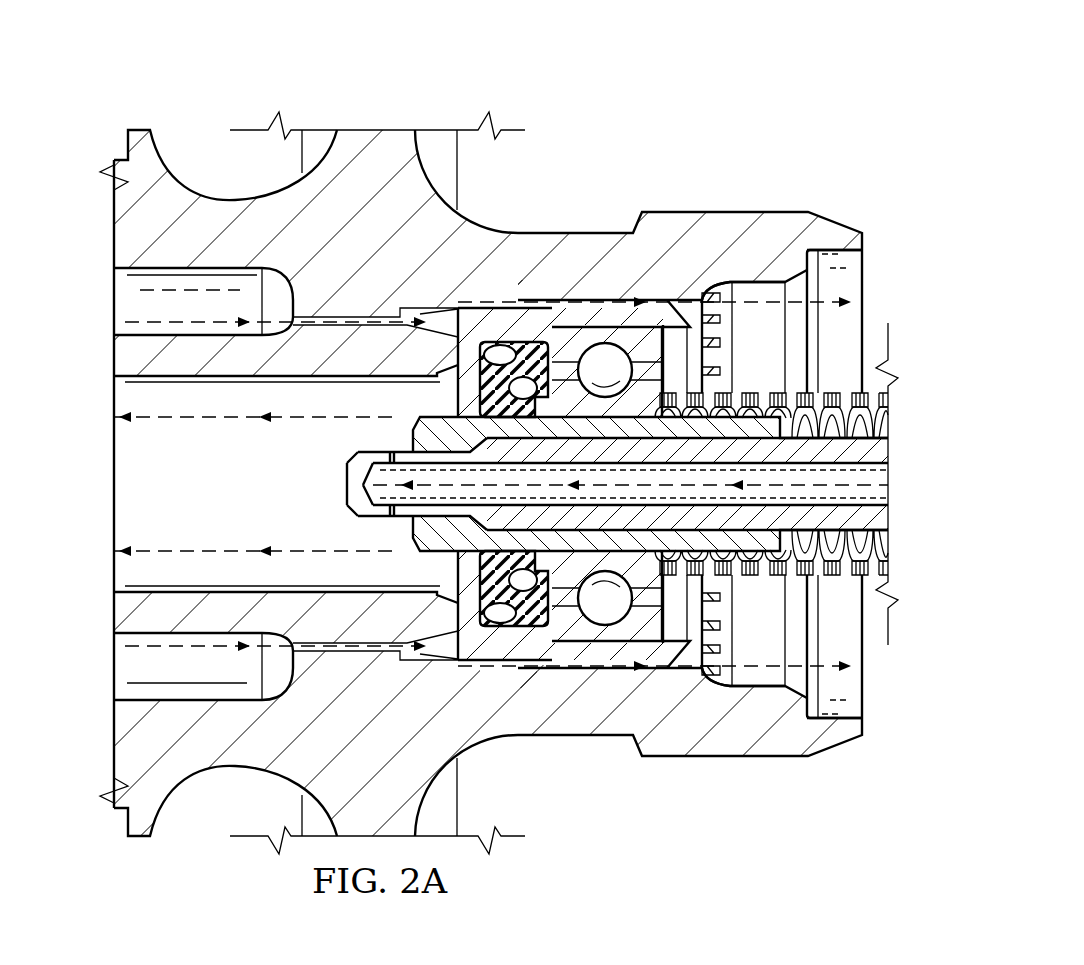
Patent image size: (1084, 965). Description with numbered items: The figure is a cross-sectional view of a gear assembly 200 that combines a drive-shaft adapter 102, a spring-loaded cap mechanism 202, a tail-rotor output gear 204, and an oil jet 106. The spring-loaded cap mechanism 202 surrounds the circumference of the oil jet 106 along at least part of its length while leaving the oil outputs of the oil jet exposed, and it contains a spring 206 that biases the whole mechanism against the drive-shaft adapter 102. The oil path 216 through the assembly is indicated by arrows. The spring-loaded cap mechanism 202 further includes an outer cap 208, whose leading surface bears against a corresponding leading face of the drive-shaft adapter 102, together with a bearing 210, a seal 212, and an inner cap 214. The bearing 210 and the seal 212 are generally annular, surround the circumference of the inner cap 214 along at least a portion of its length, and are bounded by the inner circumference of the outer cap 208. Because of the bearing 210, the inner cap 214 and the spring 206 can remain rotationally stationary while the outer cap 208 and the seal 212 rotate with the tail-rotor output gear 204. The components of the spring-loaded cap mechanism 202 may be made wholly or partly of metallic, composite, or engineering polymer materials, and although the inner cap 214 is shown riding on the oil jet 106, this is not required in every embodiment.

The gear assembly 200 is at (668, 68).
The drive-shaft adapter 102 is at (123, 350).
The tail-rotor output gear 204 is at (731, 217).
The bearing 210 is at (580, 337).
The seal 212 is at (490, 375).
The inner cap 214 is at (430, 537).
The oil jet 106 is at (882, 517).
The spring-loaded cap mechanism 202 is at (716, 610).
The oil path 216 is at (810, 303).
The spring 206 is at (877, 388).
The outer cap 208 is at (673, 657).